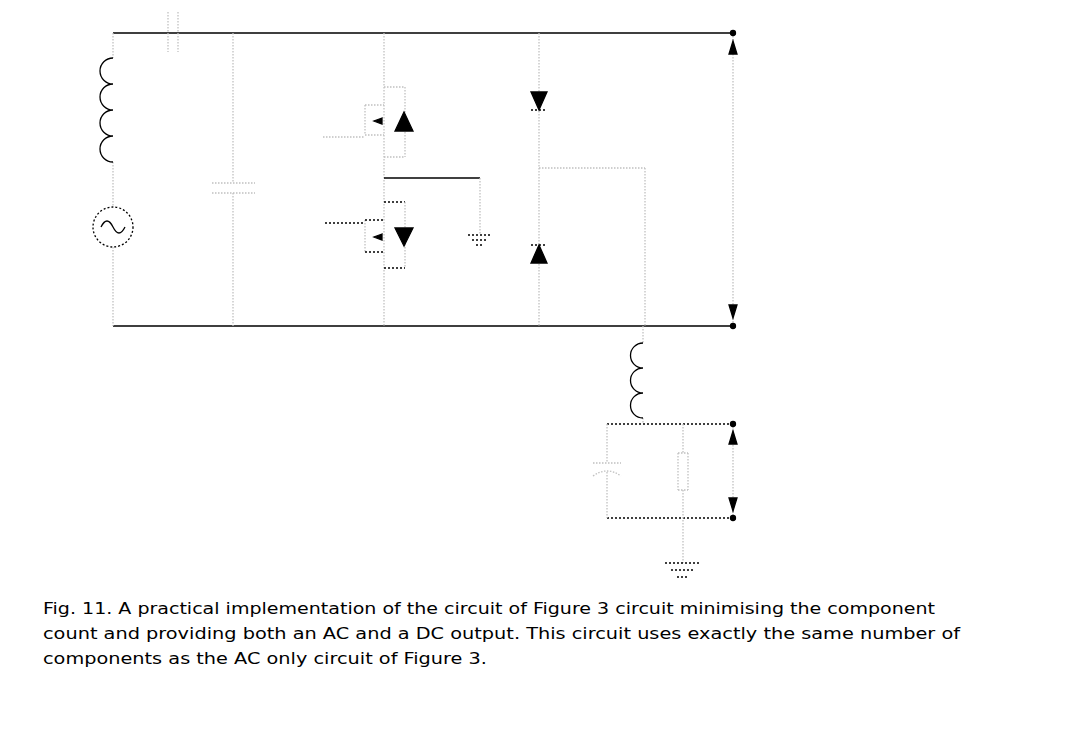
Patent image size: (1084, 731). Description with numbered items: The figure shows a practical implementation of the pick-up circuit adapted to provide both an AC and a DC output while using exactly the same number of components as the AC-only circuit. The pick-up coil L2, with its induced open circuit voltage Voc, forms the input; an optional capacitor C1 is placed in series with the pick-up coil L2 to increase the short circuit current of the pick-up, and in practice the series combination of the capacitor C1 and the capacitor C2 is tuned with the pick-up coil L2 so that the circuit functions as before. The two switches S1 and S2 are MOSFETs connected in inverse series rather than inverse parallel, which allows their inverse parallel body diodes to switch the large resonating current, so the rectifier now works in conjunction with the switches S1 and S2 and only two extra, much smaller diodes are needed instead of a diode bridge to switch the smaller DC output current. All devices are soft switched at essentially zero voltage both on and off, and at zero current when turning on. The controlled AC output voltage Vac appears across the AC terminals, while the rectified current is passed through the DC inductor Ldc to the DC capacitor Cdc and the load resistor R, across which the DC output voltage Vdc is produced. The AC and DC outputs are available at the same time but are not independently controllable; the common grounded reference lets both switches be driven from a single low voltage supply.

The pick-up coil L2 is at (84, 120).
The open circuit voltage Voc is at (89, 266).
The optional capacitor C1 is at (178, 54).
The capacitor C2 is at (258, 179).
The switch S1 is at (385, 122).
The switch S2 is at (386, 235).
The AC output voltage Vac is at (763, 180).
The DC inductor Ldc is at (662, 375).
The DC capacitor Cdc is at (631, 471).
The load resistor R is at (689, 500).
The DC output voltage Vdc is at (757, 471).